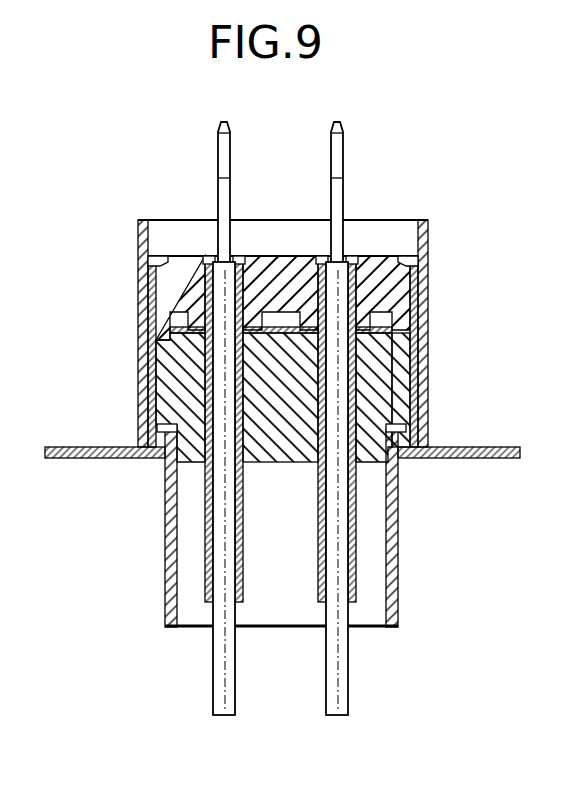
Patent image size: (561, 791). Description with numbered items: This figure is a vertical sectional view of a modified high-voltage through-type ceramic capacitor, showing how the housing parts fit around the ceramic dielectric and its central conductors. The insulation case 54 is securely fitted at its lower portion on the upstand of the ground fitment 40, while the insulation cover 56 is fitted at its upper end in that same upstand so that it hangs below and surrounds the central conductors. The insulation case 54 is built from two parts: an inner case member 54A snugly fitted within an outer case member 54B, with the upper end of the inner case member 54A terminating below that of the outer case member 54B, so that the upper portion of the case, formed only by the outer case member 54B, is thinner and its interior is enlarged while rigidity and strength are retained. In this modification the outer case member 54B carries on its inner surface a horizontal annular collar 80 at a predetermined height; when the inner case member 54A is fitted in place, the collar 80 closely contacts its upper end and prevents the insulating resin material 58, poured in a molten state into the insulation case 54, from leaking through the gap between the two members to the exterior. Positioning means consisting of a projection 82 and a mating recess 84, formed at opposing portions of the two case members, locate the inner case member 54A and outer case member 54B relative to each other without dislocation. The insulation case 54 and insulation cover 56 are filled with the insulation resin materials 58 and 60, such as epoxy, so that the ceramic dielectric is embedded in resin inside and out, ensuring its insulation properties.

The insulation case 54 is at (131, 271).
The inner case member 54A is at (418, 292).
The outer case member 54B is at (428, 232).
The insulation resin material 58 is at (280, 256).
The annular collar 80 is at (400, 262).
The projection 82 is at (425, 367).
The recess 84 is at (401, 390).
The insulation resin material 60 is at (285, 462).
The insulation cover 56 is at (398, 500).
The ground fitment 40 is at (102, 458).